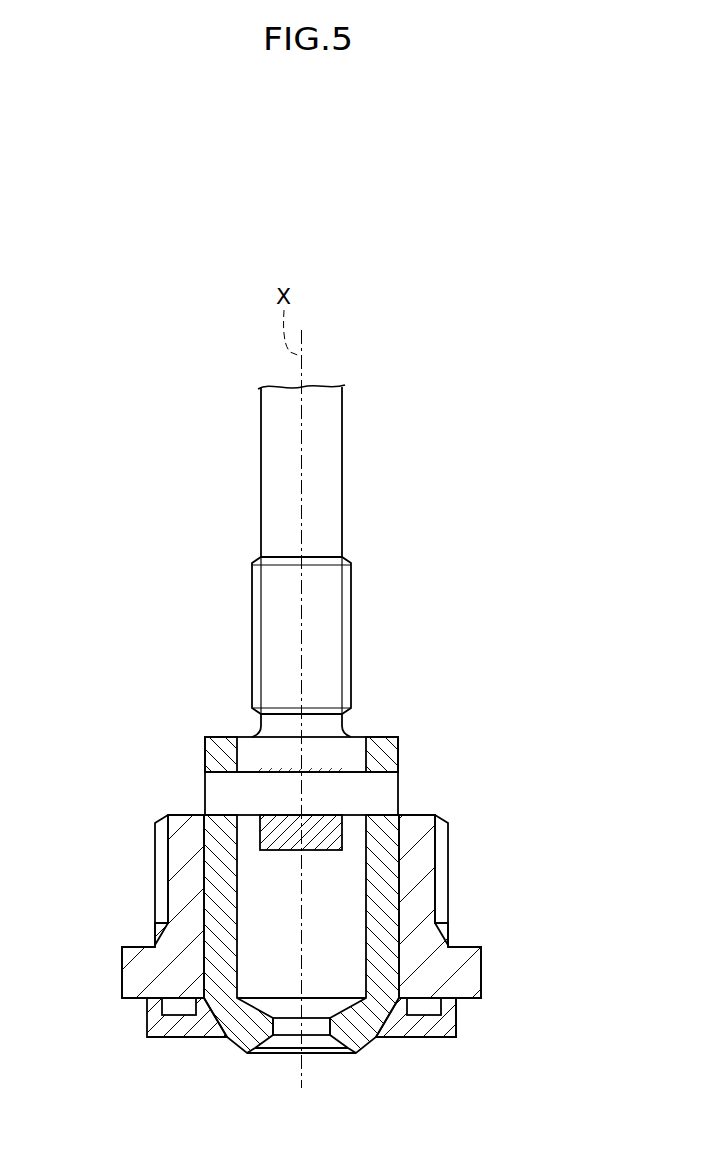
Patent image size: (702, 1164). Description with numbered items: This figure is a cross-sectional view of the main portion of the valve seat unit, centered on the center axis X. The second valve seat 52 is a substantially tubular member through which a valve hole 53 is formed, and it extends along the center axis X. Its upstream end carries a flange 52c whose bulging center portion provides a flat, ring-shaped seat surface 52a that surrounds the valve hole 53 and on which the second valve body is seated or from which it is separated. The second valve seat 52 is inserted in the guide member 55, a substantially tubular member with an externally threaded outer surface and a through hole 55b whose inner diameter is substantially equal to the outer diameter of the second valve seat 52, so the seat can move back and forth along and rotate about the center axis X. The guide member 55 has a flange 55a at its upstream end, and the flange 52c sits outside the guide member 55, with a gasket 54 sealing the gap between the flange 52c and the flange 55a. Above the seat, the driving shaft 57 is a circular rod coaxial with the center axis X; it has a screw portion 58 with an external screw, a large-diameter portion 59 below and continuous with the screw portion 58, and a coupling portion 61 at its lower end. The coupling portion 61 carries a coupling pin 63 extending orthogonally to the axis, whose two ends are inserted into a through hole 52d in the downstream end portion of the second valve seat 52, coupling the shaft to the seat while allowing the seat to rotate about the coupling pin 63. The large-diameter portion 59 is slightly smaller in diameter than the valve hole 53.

The second valve seat 52 is at (210, 1038).
The seat surface 52a is at (352, 1054).
The flange 52c is at (423, 1033).
The through hole 52d is at (220, 815).
The valve hole 53 is at (378, 874).
The gasket 54 is at (428, 1007).
The guide member 55 is at (482, 968).
The flange 55a is at (150, 975).
The through hole 55b is at (205, 886).
The driving shaft 57 is at (343, 418).
The screw portion 58 is at (322, 605).
The large-diameter portion 59 is at (348, 750).
The coupling portion 61 is at (330, 832).
The coupling pin 63 is at (353, 795).